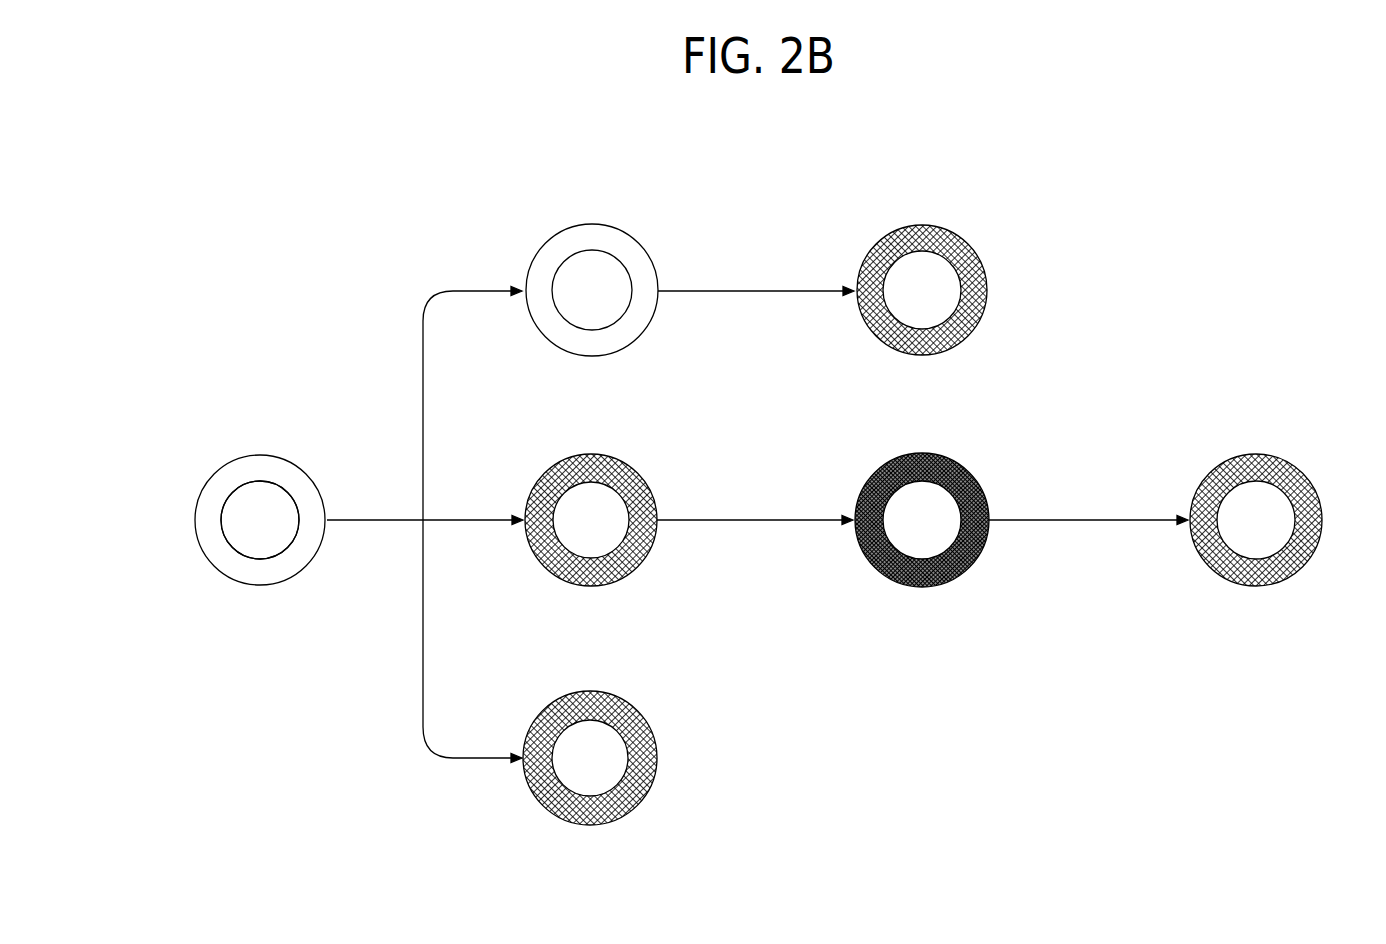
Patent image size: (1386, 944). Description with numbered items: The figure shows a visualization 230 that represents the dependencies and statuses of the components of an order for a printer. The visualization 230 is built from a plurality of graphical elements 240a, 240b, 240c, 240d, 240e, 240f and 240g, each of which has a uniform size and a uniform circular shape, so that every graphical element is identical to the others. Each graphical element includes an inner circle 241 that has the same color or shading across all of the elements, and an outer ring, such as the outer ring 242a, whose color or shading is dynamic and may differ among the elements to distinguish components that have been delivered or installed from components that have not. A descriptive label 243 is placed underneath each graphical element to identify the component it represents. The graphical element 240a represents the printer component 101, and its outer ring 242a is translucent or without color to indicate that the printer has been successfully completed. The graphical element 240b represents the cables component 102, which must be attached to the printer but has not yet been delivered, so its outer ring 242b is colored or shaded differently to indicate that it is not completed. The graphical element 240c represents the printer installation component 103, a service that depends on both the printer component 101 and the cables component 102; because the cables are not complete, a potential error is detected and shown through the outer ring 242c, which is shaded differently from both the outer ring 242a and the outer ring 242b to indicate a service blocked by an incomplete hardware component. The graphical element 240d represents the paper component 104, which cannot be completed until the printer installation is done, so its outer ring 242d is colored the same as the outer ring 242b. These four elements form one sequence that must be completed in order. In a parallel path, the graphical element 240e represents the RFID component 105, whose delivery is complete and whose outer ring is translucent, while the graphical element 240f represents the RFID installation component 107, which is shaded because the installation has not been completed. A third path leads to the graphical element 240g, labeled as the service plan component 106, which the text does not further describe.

The visualization 230 is at (1372, 72).
The graphical element 240a is at (245, 489).
The graphical element 240b is at (579, 501).
The graphical element 240c is at (906, 508).
The graphical element 240d is at (1244, 503).
The graphical element 240e is at (547, 242).
The graphical element 240f is at (870, 248).
The graphical element 240g is at (540, 715).
The inner circle 241 is at (257, 498).
The outer ring 242a is at (290, 477).
The outer ring 242b is at (627, 480).
The outer ring 242c is at (965, 488).
The outer ring 242d is at (1293, 490).
The descriptive label 243 is at (242, 618).
The printer component 101 is at (245, 540).
The cables component 102 is at (579, 520).
The printer installation component 103 is at (906, 539).
The paper component 104 is at (1244, 522).
The RFID component 105 is at (559, 298).
The Service plan 106 is at (567, 771).
The RFID installation component 107 is at (898, 313).